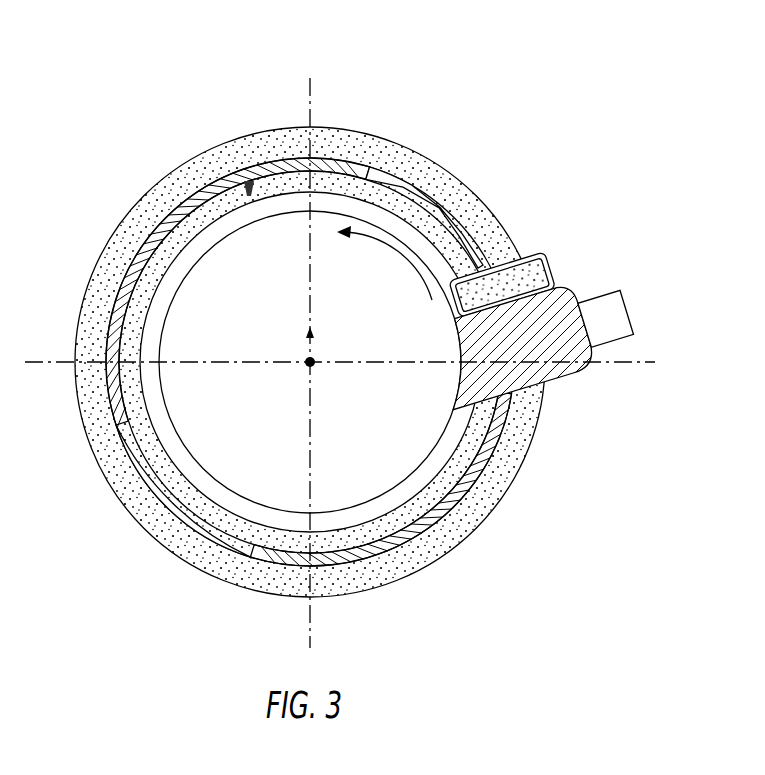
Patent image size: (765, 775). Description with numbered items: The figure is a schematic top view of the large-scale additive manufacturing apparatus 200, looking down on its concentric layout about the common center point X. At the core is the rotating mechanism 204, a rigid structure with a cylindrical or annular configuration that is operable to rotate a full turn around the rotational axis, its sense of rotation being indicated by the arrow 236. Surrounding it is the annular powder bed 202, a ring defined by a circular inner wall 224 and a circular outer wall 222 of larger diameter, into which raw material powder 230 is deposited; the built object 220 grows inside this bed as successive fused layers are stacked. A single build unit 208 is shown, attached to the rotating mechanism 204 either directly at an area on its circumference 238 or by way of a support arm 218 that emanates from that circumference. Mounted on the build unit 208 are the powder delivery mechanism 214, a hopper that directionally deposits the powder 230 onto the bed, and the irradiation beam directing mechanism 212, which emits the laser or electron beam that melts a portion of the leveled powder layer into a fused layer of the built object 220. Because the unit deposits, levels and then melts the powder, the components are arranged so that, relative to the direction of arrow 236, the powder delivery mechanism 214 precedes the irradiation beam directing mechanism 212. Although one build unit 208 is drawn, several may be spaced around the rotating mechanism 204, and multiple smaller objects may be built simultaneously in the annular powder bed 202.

The large-scale additive manufacturing apparatus 200 is at (133, 90).
The annular powder bed 202 is at (100, 200).
The rotating mechanism 204 is at (333, 222).
The build unit 208 is at (677, 205).
The irradiation beam directing mechanism 212 is at (643, 305).
The powder delivery mechanism 214 is at (541, 254).
The support arm 218 is at (573, 300).
The built object 220 is at (438, 210).
The circular outer wall 222 is at (105, 248).
The circular inner wall 224 is at (123, 320).
The raw material powder 230 is at (490, 237).
The arrow 236 is at (402, 266).
The circumference 238 is at (248, 190).